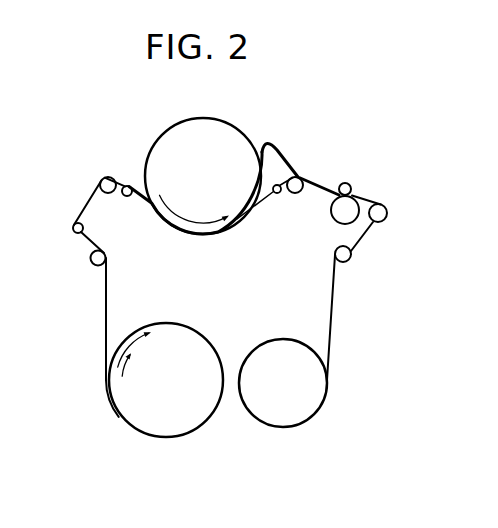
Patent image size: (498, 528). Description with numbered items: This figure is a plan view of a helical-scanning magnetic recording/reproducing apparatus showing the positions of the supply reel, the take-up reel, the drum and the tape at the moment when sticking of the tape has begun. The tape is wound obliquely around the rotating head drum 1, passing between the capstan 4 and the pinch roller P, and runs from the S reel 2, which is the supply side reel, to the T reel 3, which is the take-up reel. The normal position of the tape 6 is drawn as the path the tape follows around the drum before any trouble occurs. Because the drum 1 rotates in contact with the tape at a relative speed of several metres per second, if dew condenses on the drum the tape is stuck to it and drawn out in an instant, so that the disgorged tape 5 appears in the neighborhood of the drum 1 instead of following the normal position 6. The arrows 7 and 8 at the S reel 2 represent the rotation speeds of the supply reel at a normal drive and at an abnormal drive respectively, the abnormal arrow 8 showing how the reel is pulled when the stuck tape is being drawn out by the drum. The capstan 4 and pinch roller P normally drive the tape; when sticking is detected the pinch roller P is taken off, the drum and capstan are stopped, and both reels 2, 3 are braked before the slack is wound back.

The drum 1 is at (245, 216).
The S reel 2 is at (185, 329).
The T reel 3 is at (277, 339).
The capstan 4 is at (352, 185).
The disgorged tape 5 is at (270, 142).
The normal position of the tape 6 is at (286, 172).
The arrow representing rotation speed of the S reel at normal drive 7 is at (111, 363).
The arrow representing rotation speed of the S reel at abnormal drive 8 is at (113, 397).
The pinch roller P is at (334, 211).